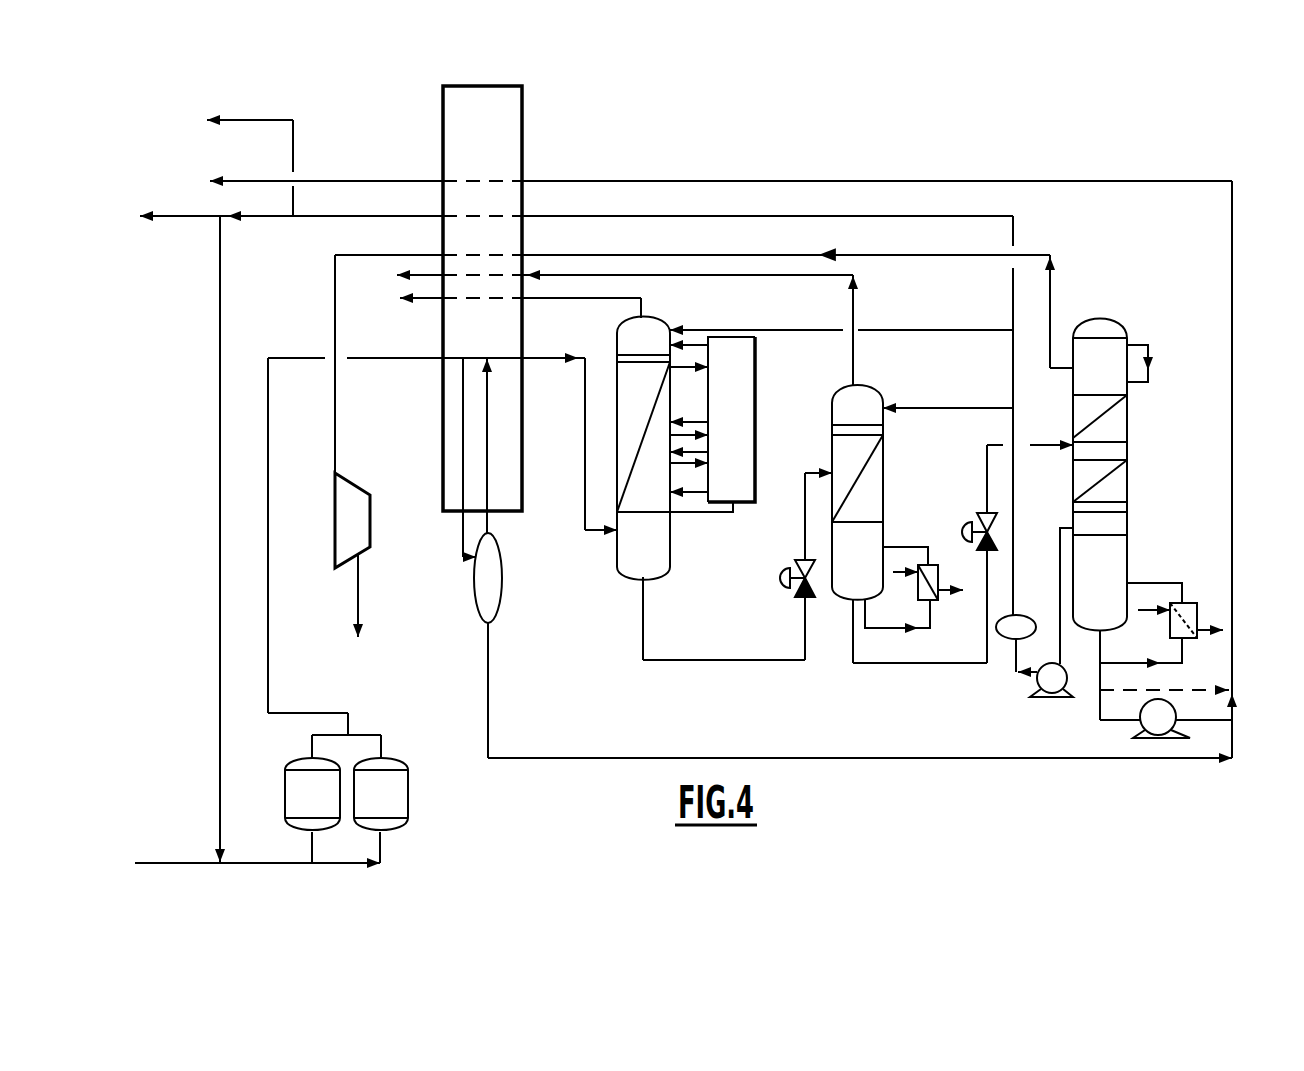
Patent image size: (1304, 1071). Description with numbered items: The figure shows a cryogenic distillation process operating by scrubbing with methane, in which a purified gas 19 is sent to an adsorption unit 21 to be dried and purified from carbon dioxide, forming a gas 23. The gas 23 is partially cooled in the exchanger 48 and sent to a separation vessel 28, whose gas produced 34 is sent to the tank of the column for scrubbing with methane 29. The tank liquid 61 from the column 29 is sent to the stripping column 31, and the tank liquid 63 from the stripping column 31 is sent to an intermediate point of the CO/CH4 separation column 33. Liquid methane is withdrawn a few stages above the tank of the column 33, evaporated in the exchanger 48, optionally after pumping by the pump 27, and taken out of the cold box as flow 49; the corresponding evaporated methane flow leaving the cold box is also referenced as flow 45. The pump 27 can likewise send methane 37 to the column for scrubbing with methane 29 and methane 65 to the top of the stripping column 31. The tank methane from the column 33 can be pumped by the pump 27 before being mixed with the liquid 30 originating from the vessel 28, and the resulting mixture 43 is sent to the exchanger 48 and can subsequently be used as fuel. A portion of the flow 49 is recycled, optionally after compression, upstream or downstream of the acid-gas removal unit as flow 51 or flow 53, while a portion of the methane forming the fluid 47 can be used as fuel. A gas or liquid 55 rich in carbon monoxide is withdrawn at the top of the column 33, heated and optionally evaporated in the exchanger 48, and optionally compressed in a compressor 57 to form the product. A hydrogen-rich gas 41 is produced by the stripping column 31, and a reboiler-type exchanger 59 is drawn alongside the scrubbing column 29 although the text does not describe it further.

The purified gas 19 is at (205, 862).
The adsorption unit 21 is at (402, 836).
The gas 23 is at (270, 642).
The pump 27 is at (1163, 740).
The separation vessel 28 is at (503, 603).
The column for scrubbing with methane 29 is at (617, 574).
The liquid 30 is at (807, 758).
The stripping column 31 is at (867, 392).
The CO/CH4 separation column 33 is at (1127, 482).
The gas produced 34 is at (570, 360).
The methane 37 is at (826, 328).
The hydrogen-rich gas 41 is at (858, 302).
The mixture 43 is at (1232, 504).
The flow 45 is at (1013, 238).
The fluid 47 is at (258, 103).
The exchanger 48 is at (522, 121).
The flow 49 is at (252, 220).
The recycled flow 51 is at (220, 766).
The recycled flow 53 is at (190, 218).
The gas or liquid rich in carbon monoxide 55 is at (335, 433).
The compressor 57 is at (348, 500).
The reboiler heat exchanger 59 is at (755, 417).
The tank liquid 61 is at (758, 660).
The tank liquid 63 is at (890, 663).
The methane 65 is at (985, 408).